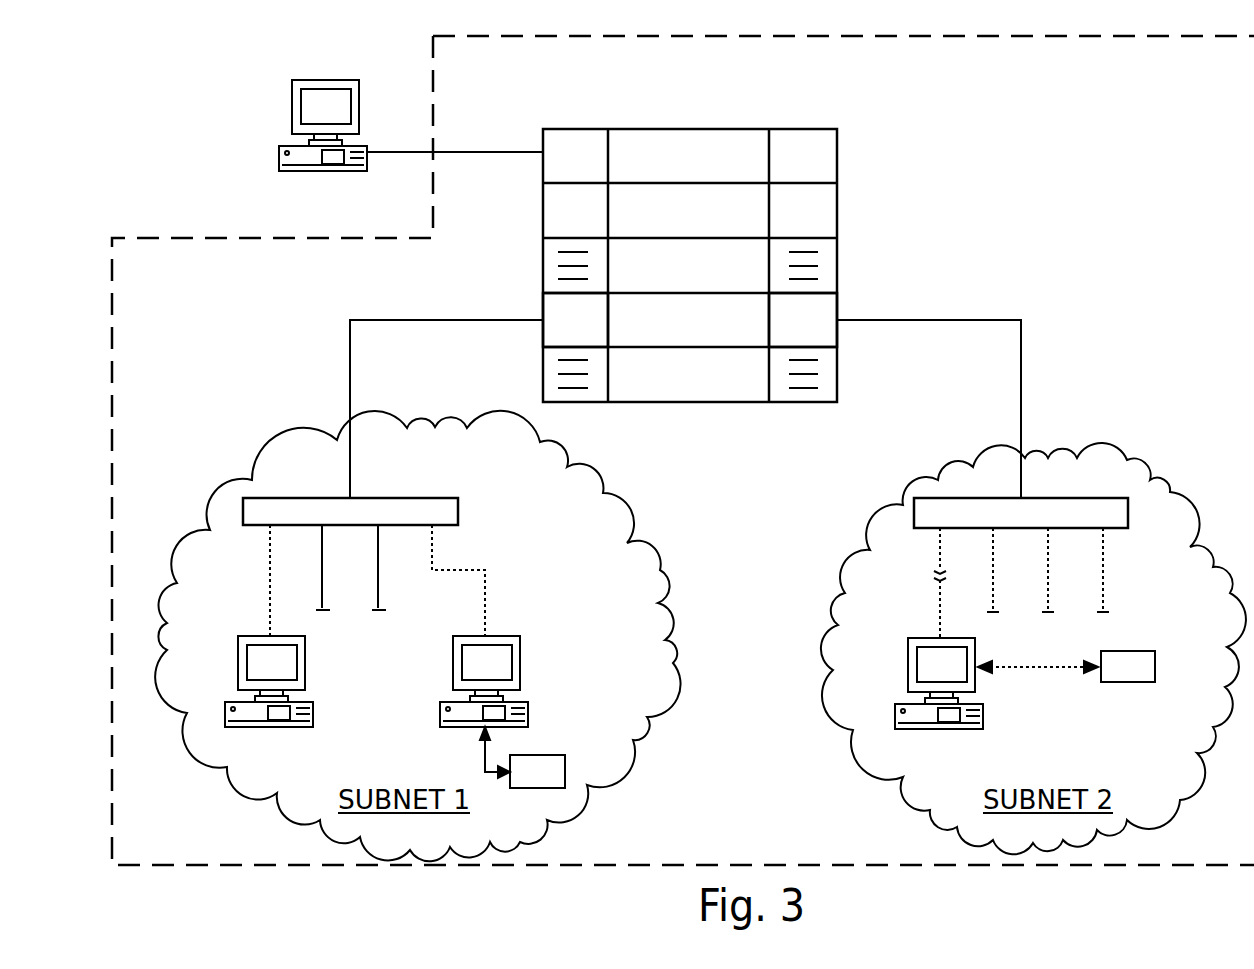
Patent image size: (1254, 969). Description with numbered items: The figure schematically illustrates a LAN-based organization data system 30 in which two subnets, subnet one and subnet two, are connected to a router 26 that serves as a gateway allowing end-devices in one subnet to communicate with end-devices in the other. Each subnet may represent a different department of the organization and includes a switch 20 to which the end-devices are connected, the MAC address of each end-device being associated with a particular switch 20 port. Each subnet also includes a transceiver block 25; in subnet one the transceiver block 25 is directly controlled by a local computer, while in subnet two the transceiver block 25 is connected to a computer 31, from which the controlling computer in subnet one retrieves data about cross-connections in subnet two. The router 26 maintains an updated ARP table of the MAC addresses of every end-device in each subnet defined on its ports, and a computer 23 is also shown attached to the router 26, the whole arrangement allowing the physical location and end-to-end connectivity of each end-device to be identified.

The network system 30 is at (207, 222).
The management computer 23 is at (278, 150).
The router 26 is at (675, 128).
The switch 20 is at (296, 496).
The computer 31 is at (912, 642).
The transceiver block 25 is at (540, 756).